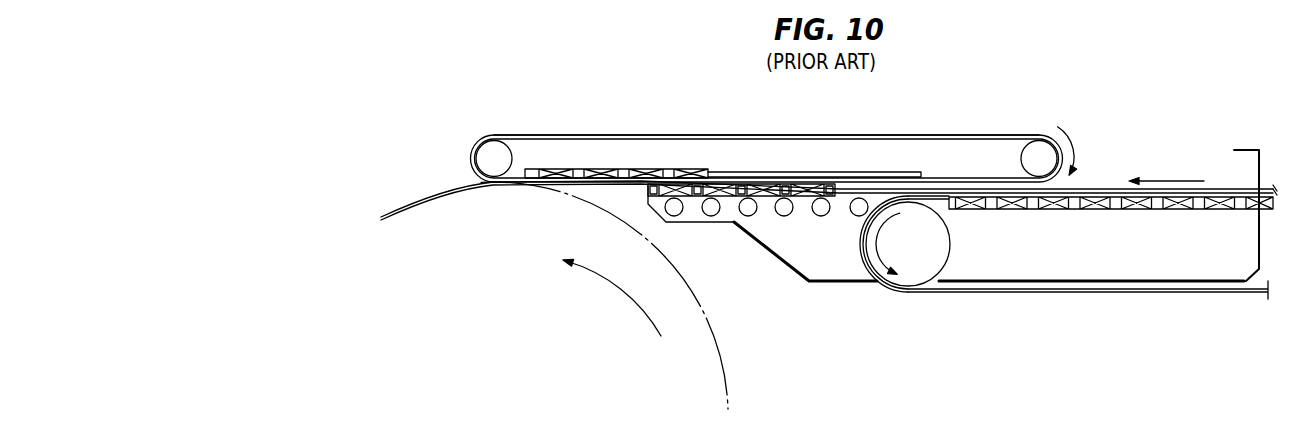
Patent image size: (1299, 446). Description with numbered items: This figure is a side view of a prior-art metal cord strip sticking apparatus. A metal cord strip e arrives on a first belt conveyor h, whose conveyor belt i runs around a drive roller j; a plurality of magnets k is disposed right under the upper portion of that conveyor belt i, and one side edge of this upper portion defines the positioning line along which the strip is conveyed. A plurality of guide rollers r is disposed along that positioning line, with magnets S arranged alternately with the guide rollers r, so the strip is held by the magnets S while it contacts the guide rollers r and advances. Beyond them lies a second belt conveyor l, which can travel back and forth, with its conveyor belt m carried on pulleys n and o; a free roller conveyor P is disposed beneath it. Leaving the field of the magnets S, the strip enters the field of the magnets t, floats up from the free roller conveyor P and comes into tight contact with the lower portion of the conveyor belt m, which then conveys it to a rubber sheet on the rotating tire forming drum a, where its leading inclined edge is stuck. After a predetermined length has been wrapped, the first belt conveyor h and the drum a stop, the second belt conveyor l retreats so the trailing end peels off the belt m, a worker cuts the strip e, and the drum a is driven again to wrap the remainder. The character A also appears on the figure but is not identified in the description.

The pulley n is at (503, 162).
The magnets t is at (630, 172).
The second belt conveyor l is at (711, 131).
The magnets S is at (680, 190).
The guide rollers r is at (767, 187).
The conveyor belt m is at (858, 135).
The pulley o is at (1030, 150).
The metal cord strip e is at (1092, 190).
The feed direction A is at (1175, 177).
The magnets k is at (1168, 209).
The free roller conveyor P is at (742, 207).
The drive roller j is at (951, 247).
The conveyor belt i is at (1063, 283).
The first belt conveyor h is at (1106, 300).
The tire forming drum a is at (727, 357).